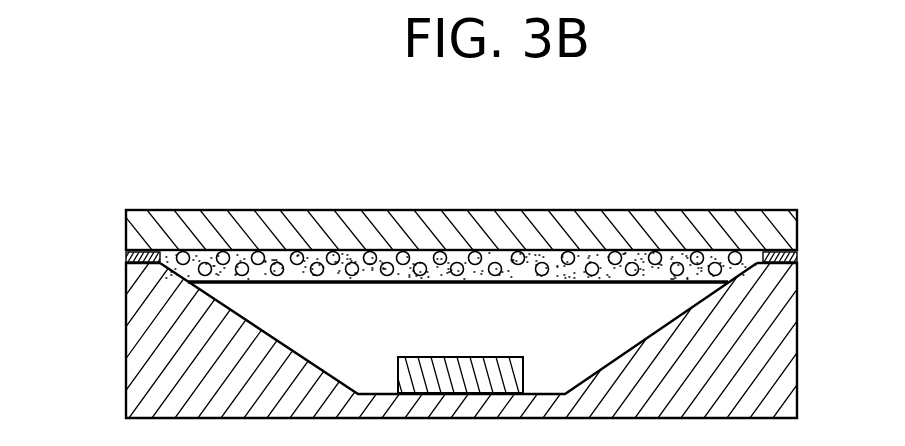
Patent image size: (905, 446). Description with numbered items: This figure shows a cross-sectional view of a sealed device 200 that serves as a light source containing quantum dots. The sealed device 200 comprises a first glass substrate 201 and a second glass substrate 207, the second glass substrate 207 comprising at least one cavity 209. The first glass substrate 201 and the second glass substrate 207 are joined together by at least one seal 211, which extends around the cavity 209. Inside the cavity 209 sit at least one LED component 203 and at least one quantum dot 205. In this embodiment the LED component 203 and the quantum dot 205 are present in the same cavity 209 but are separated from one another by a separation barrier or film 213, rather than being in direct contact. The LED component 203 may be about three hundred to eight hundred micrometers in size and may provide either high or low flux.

The sealed device 200 is at (96, 219).
The first glass substrate 201 is at (476, 243).
The LED component 203 is at (483, 390).
The quantum dot 205 is at (403, 257).
The second glass substrate 207 is at (736, 373).
The cavity 209 is at (475, 325).
The seal 211 is at (778, 248).
The separation barrier or film 213 is at (727, 284).